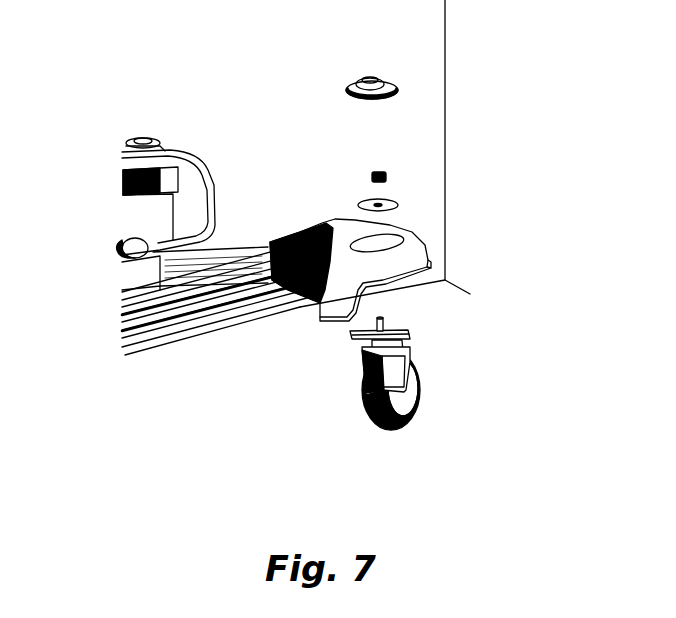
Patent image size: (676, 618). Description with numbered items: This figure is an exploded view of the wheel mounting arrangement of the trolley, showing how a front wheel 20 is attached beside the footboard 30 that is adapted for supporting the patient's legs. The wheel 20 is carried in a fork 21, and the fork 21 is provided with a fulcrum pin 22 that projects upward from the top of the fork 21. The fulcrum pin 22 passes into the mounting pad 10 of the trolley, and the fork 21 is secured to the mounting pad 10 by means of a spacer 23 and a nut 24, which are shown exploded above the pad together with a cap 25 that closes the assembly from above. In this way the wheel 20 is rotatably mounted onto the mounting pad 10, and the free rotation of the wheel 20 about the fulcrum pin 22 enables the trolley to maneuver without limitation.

The mounting pad 10 is at (316, 225).
The front wheel 20 is at (420, 413).
The fork 21 is at (410, 362).
The fulcrum pin 22 is at (393, 322).
The spacer 23 is at (362, 200).
The nut 24 is at (368, 172).
The cap 25 is at (358, 75).
The footboard 30 is at (217, 315).